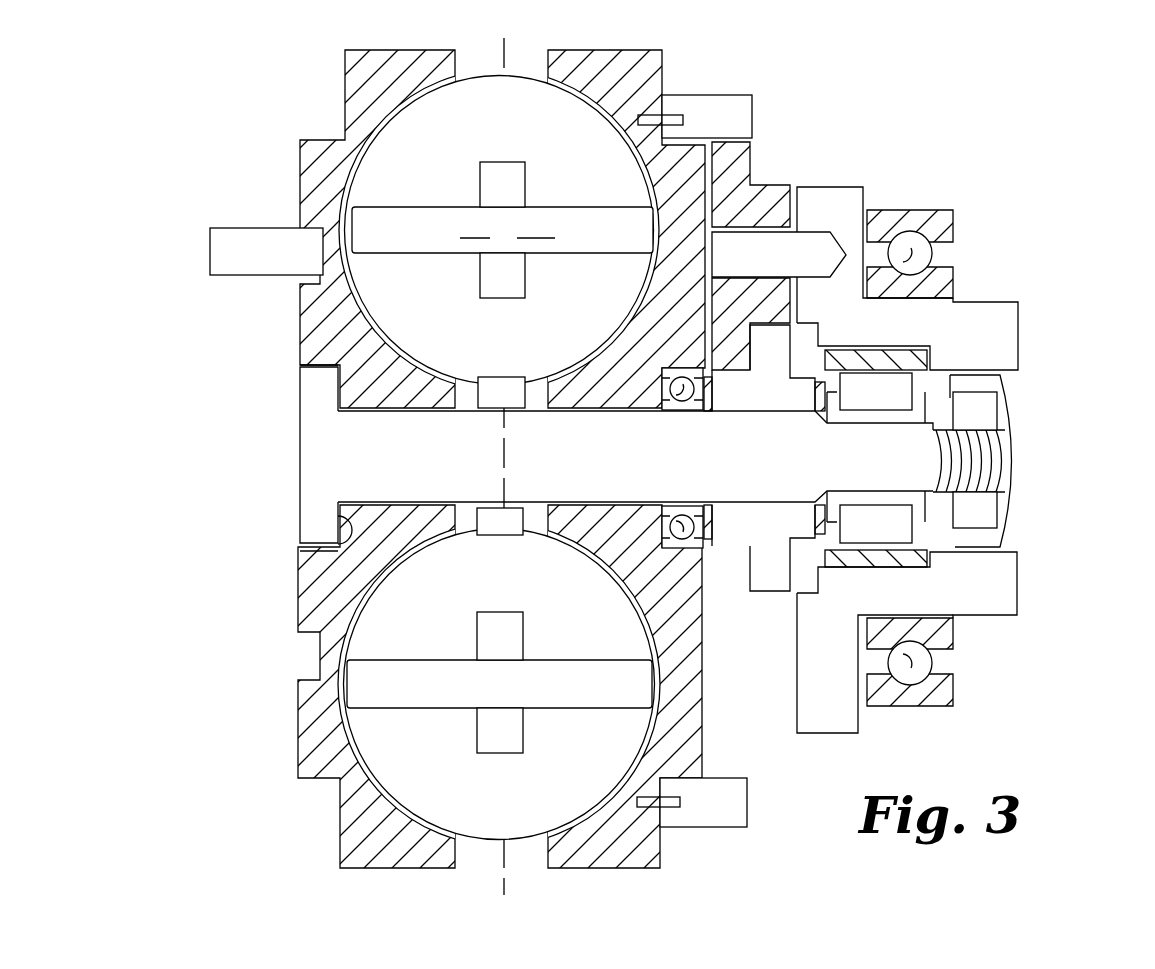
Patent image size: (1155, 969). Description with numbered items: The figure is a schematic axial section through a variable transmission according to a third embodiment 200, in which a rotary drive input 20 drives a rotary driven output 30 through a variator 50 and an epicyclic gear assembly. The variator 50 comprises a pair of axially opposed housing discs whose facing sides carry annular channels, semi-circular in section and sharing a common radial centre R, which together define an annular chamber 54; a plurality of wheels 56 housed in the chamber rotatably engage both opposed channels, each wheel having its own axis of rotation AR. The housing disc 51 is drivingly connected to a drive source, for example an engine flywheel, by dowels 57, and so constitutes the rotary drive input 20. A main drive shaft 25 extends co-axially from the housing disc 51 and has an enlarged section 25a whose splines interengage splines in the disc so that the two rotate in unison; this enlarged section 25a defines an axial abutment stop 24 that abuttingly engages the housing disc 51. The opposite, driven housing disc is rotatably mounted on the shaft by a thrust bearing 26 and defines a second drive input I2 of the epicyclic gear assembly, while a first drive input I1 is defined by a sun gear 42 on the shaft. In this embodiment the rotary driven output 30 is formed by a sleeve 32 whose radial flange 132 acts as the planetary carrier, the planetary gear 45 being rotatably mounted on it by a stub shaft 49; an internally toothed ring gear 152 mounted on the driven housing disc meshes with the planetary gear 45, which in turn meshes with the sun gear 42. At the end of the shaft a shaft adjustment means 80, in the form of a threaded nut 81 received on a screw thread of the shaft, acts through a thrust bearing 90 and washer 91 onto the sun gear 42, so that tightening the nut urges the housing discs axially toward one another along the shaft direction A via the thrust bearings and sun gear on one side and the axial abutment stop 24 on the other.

The embodiment 200 is at (183, 152).
The variator 50 is at (296, 108).
The housing disc 51 is at (318, 157).
The annular chamber 54 is at (385, 290).
The wheel 56 is at (410, 215).
The dowel 57 is at (280, 272).
The internally toothed ring gear 152 is at (742, 105).
The rotary drive input 20 is at (278, 342).
The main drive shaft 25 is at (330, 440).
The enlarged section 25a is at (312, 517).
The axial abutment stop 24 is at (345, 548).
The thrust bearing 26 is at (645, 540).
The rotary driven output 30 is at (1047, 311).
The sleeve 32 is at (958, 303).
The radial flange 132 is at (846, 194).
The first sun gear 42 is at (770, 553).
The planetary gear 45 is at (752, 165).
The stub shaft 49 is at (788, 272).
The shaft adjustment means 80 is at (1022, 420).
The threaded nut 81 is at (980, 512).
The thrust bearing 90 is at (935, 570).
The washer 91 is at (962, 538).
The axial direction A is at (1052, 465).
The axis of rotation AR is at (507, 76).
The common radial centre R is at (500, 240).
The first drive input I1 is at (745, 598).
The second drive input I2 is at (710, 830).